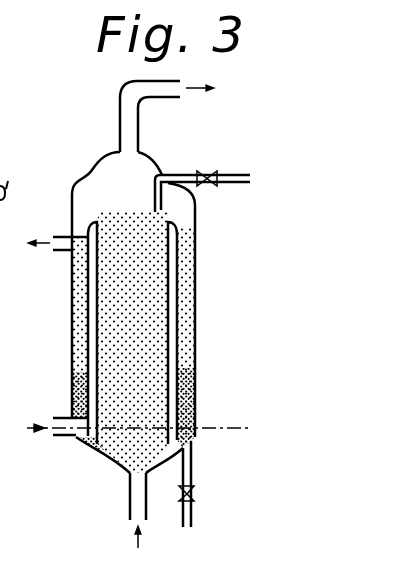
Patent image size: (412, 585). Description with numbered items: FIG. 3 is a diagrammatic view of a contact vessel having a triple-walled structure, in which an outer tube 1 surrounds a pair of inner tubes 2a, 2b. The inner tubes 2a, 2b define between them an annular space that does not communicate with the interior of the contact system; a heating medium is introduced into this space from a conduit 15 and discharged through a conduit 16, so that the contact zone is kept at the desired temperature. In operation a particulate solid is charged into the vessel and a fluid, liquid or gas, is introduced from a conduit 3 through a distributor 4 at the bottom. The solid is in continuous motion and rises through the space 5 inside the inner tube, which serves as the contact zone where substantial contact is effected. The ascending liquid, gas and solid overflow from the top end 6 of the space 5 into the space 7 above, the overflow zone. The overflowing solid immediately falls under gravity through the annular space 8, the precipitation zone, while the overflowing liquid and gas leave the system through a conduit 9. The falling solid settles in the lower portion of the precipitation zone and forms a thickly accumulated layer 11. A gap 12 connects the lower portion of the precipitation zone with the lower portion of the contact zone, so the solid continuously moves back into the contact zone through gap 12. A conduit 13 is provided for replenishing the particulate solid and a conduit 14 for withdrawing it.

The outer tube 1 is at (72, 360).
The inner tube 2a is at (108, 303).
The inner tube 2b is at (178, 283).
The conduit 3 is at (128, 518).
The distributor 4 is at (130, 476).
The space (contact zone) 5 is at (122, 370).
The top end 6 is at (152, 220).
The space (overflow zone) 7 is at (95, 197).
The annular space (precipitation zone) 8 is at (185, 240).
The conduit 9 is at (138, 127).
The thickly accumulated layer 11 is at (197, 378).
The gap 12 is at (100, 446).
The conduit 13 is at (227, 173).
The conduit 14 is at (192, 470).
The conduit 15 is at (55, 436).
The conduit 16 is at (62, 253).